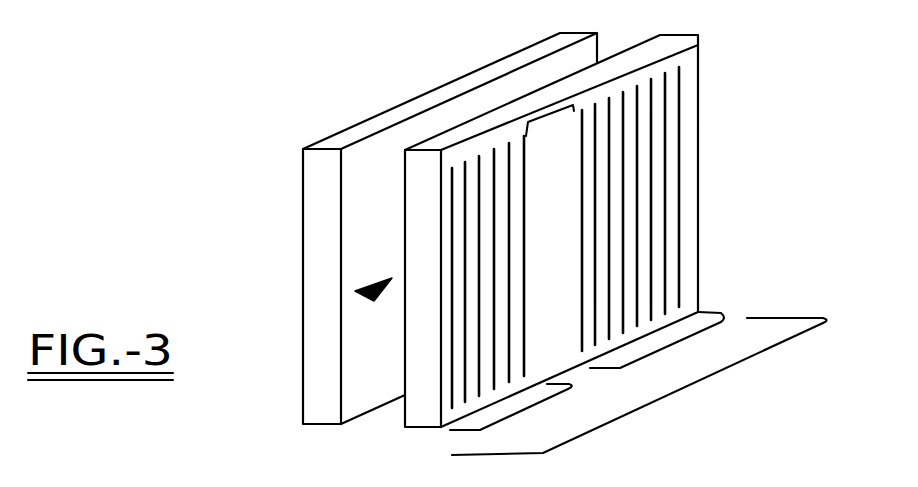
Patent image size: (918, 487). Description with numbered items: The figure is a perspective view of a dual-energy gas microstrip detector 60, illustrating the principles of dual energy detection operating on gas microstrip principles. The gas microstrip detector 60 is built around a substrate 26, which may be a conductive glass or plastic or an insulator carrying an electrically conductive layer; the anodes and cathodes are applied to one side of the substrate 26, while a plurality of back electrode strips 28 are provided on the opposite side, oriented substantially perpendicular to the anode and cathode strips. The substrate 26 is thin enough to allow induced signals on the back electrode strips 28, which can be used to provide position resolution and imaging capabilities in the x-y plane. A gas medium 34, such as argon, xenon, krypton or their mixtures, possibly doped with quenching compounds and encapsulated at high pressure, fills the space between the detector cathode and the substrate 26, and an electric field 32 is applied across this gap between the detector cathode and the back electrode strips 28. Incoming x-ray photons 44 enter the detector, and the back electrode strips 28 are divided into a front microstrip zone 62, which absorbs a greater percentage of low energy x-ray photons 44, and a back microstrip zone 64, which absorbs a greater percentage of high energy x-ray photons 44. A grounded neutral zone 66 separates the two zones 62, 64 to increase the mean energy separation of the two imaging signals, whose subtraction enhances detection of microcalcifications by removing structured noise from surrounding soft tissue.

The substrate 26 is at (692, 157).
The back electrode strips 28 is at (671, 400).
The electric field 32 is at (388, 202).
The gas medium 34 is at (473, 110).
The x-ray photons 44 is at (358, 281).
The gas microstrip detector 60 is at (722, 88).
The front microstrip zone 62 is at (545, 416).
The back microstrip zone 64 is at (664, 352).
The neutral zone 66 is at (550, 112).